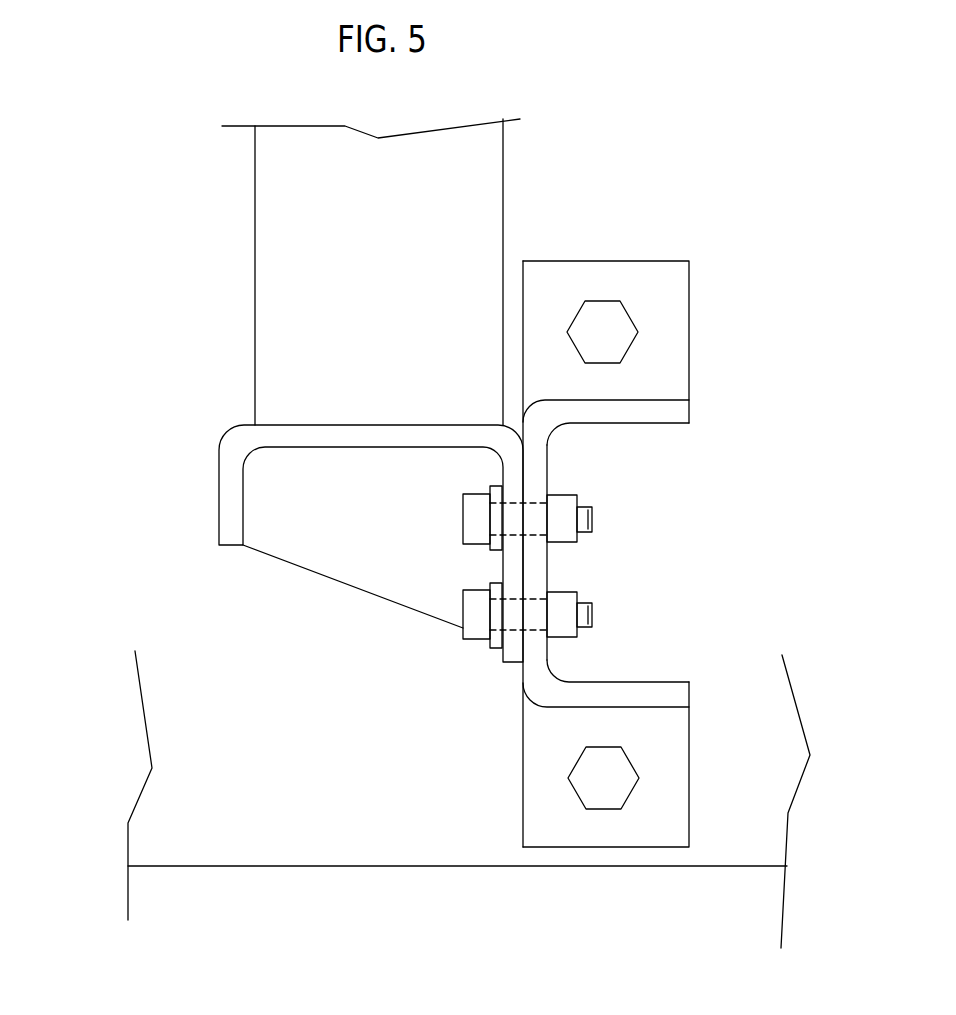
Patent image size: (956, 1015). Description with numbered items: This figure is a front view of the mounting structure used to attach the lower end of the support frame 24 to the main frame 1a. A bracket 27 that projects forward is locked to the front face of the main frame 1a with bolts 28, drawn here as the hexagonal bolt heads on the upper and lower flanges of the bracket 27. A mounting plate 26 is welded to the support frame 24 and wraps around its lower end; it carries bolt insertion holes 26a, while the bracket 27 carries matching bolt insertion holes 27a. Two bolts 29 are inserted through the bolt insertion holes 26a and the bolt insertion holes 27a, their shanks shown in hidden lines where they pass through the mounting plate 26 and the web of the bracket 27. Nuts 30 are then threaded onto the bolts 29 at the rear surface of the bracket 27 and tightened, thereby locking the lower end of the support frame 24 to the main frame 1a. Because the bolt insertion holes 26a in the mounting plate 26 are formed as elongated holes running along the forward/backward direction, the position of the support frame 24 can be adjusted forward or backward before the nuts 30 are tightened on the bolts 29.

The main frame 1a is at (361, 858).
The support frame 24 is at (260, 262).
The mounting plate 26 is at (220, 465).
The bolt insertion holes 26a is at (491, 548).
The bracket 27 is at (630, 697).
The bolt insertion holes 27a is at (552, 545).
The bolts 28 is at (605, 308).
The bolts 29 is at (463, 510).
The nuts 30 is at (567, 496).